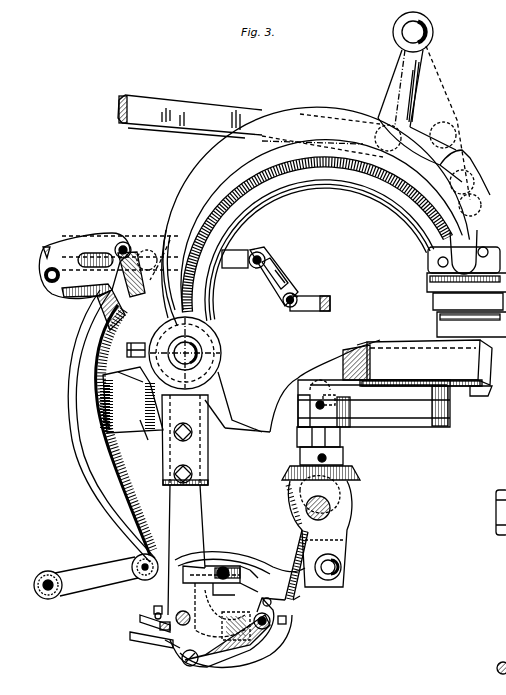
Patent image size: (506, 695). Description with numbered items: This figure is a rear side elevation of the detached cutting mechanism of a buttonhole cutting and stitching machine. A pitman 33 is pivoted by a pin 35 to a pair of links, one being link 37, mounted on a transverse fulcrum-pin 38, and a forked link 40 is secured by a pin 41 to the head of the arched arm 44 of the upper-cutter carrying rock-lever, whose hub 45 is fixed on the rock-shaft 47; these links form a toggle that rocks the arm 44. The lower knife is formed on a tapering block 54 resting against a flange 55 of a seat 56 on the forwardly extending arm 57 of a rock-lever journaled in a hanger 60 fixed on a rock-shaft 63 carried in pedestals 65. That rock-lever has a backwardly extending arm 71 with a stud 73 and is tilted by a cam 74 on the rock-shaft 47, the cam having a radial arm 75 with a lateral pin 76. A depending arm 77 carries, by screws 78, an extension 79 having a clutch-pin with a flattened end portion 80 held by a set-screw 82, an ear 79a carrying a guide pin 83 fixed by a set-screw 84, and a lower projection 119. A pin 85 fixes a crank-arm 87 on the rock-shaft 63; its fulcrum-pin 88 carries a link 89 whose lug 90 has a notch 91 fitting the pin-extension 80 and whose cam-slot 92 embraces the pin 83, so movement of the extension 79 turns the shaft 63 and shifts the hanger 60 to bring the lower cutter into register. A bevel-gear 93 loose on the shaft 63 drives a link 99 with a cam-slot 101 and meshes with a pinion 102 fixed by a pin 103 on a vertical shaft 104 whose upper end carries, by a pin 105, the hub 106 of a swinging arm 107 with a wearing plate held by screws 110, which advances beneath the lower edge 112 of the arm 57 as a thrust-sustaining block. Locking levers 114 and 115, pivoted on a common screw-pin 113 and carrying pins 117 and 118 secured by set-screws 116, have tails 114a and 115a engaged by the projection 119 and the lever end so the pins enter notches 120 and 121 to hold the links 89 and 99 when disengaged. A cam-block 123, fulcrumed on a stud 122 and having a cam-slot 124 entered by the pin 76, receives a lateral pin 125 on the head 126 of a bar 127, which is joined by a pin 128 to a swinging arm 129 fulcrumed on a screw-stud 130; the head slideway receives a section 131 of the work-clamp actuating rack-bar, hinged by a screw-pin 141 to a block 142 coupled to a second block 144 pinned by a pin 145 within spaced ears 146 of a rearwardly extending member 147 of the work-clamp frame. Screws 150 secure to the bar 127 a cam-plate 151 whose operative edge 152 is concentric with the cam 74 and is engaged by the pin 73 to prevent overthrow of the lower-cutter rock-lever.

The pitman 33 is at (218, 106).
The pin 35 is at (457, 130).
The link 37 is at (422, 123).
The transverse fulcrum-pin 38 is at (402, 34).
The forked link 40 is at (455, 160).
The pin 41 is at (474, 184).
The arched and laterally offset arm 44 is at (316, 216).
The hub 45 is at (136, 343).
The transverse rock-shaft 47 is at (185, 353).
The upwardly tapering block 54 is at (447, 337).
The flange 55 is at (372, 343).
The seat 56 is at (399, 349).
The forwardly extending arm 57 is at (464, 362).
The hanger 60 is at (315, 365).
The rock-shaft 63 is at (331, 508).
The pedestals 65 is at (499, 542).
The backwardly extending arm 71 is at (255, 431).
The stud 73 is at (213, 414).
The cam 74 is at (220, 392).
The radial arm 75 is at (140, 245).
The lateral pin 76 is at (122, 242).
The depending arm 77 is at (162, 453).
The screws 78 is at (183, 465).
The lever extension 79 is at (186, 550).
The forwardly projecting ear 79a is at (224, 564).
The clutch-pin end portion 80 is at (183, 611).
The set-screw 82 is at (158, 606).
The guide pin 83 is at (245, 566).
The set-screw 84 is at (260, 576).
The pin 85 is at (322, 493).
The crank-arm 87 is at (324, 542).
The fulcrum-pin 88 is at (341, 566).
The link 89 is at (304, 590).
The lug 90 is at (178, 655).
The notch 91 is at (222, 610).
The curved cam-slot 92 is at (221, 566).
The bevel-gear 93 is at (293, 500).
The link 99 is at (238, 560).
The curved cam-slot 101 is at (207, 577).
The bevel pinion 102 is at (345, 474).
The pin 103 is at (343, 459).
The vertical shaft 104 is at (340, 440).
The pin 105 is at (322, 408).
The hub 106 is at (298, 410).
The swinging arm 107 is at (374, 403).
The screws 110 is at (428, 380).
The lower edge 112 is at (470, 388).
The fulcrum screw-pin 113 is at (190, 666).
The locking lever 114 is at (236, 627).
The tail 114a is at (137, 635).
The locking lever 115 is at (250, 648).
The tail 115a is at (140, 618).
The set-screw 116 is at (271, 602).
The pin 117 is at (266, 590).
The pin or tooth 118 is at (270, 619).
The projection 119 is at (168, 642).
The notch 120 is at (296, 594).
The notch 121 is at (252, 582).
The stud 122 is at (54, 284).
The cam-block 123 is at (87, 260).
The cam-slot 124 is at (111, 302).
The lateral pin 125 is at (162, 250).
The head 126 is at (158, 232).
The bar 127 is at (88, 450).
The pin 128 is at (138, 562).
The swinging arm 129 is at (96, 576).
The screw-stud 130 is at (49, 575).
The rack-bar section 131 is at (50, 245).
The transverse screw-pin 141 is at (259, 253).
The block 142 is at (272, 264).
The second block 144 is at (284, 286).
The transverse pin 145 is at (282, 304).
The spaced ears 146 is at (298, 299).
The rearwardly extending member 147 is at (310, 311).
The screws 150 is at (112, 423).
The cam-plate 151 is at (141, 421).
The operative edge 152 is at (129, 377).